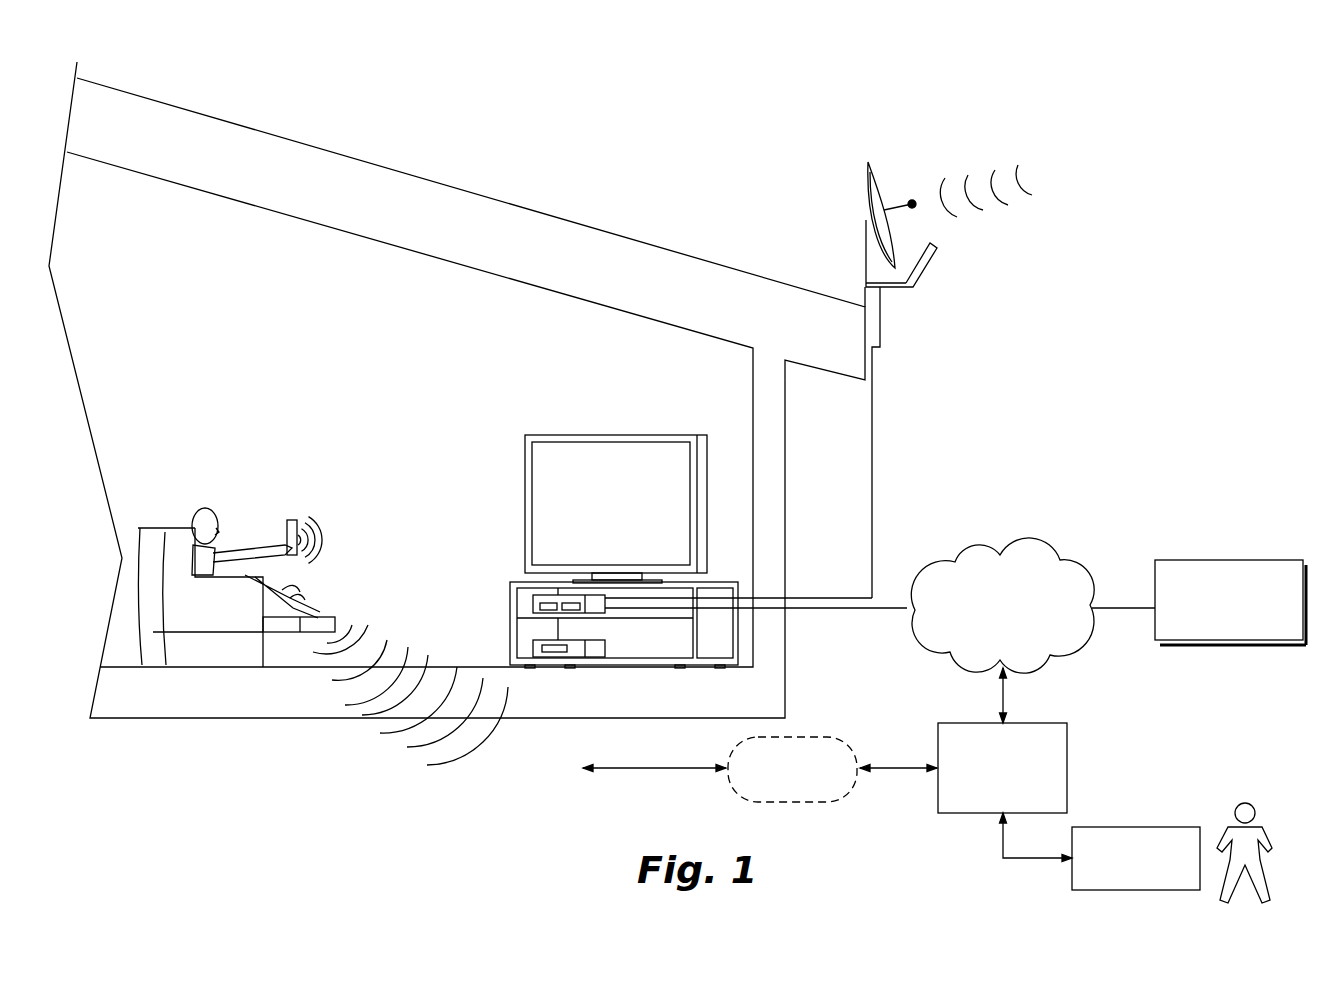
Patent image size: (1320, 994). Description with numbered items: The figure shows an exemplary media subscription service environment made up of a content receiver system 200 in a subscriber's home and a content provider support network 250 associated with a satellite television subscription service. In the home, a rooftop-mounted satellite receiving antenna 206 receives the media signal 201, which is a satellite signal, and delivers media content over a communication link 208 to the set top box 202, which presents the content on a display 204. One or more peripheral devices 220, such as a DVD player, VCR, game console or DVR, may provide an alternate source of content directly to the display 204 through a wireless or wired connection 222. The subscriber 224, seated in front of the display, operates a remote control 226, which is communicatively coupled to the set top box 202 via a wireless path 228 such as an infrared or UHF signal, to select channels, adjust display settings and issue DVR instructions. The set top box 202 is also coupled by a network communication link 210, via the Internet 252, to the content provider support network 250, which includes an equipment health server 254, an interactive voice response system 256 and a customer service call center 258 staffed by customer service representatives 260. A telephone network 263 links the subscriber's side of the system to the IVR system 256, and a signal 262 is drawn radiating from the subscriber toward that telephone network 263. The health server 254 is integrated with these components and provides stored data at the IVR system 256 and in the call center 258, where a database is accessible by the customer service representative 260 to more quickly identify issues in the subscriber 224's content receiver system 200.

The content receiver system 200 is at (750, 128).
The media signal 201 is at (1048, 175).
The set top box 202 is at (492, 597).
The display 204 is at (570, 435).
The satellite receiving antenna 206 is at (882, 200).
The communication link 208 is at (878, 465).
The network communication link 210 is at (845, 612).
The peripheral devices 220 is at (492, 640).
The wireless or wired connection 222 is at (712, 582).
The subscriber 224 is at (207, 508).
The remote control 226 is at (316, 527).
The wireless path 228 is at (340, 540).
The content provider support network 250 is at (1066, 405).
The Internet 252 is at (1042, 548).
The equipment health server 254 is at (1242, 560).
The interactive voice response (IVR) system 256 is at (1067, 770).
The customer service call center 258 is at (1135, 827).
The customer service representative 260 is at (1245, 800).
The wireless / telephone signal from user 262 is at (487, 750).
The telephone network 263 is at (805, 737).